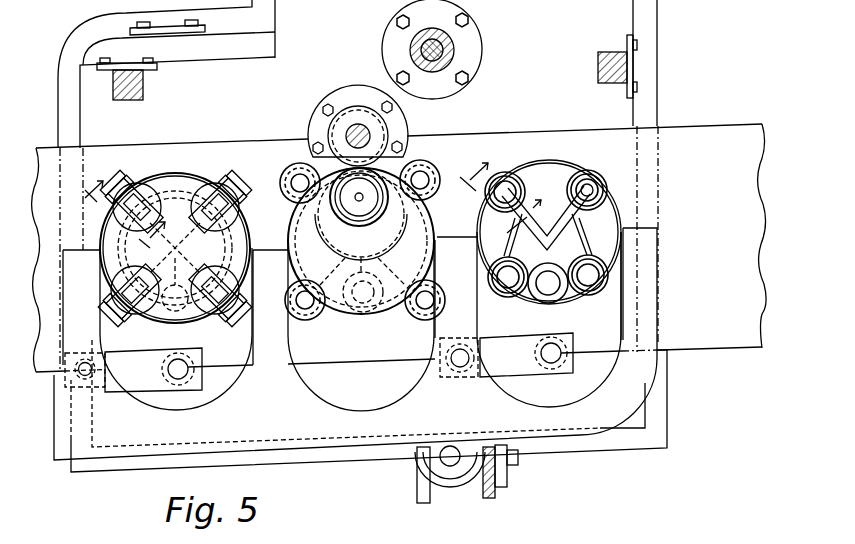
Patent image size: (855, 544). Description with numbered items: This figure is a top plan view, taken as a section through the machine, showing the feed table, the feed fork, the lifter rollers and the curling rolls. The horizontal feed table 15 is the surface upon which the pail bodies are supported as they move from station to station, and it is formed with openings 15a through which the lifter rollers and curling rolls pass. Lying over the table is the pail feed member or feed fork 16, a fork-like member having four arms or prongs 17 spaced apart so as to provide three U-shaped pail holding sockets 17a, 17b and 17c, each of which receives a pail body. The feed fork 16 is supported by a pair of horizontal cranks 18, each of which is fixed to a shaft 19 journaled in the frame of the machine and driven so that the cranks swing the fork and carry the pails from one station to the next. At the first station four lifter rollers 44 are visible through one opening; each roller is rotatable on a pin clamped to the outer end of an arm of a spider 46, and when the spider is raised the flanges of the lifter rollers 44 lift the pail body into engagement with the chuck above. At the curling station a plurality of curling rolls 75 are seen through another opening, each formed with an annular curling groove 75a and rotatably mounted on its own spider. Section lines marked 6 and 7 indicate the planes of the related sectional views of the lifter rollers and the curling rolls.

The section line 6 is at (504, 189).
The section line 7 is at (129, 205).
The feed table 15 is at (718, 204).
The openings 15a is at (233, 187).
The feed fork 16 is at (660, 377).
The arms 17 is at (88, 289).
The pail holding socket 17a is at (632, 303).
The pail holding socket 17b is at (450, 324).
The pail holding socket 17c is at (256, 331).
The horizontal cranks 18 is at (136, 375).
The shaft 19 is at (178, 376).
The lifter rollers 44 is at (596, 192).
The spider 46 is at (576, 240).
The curling rolls 75 is at (151, 176).
The annular curling groove 75a is at (603, 536).